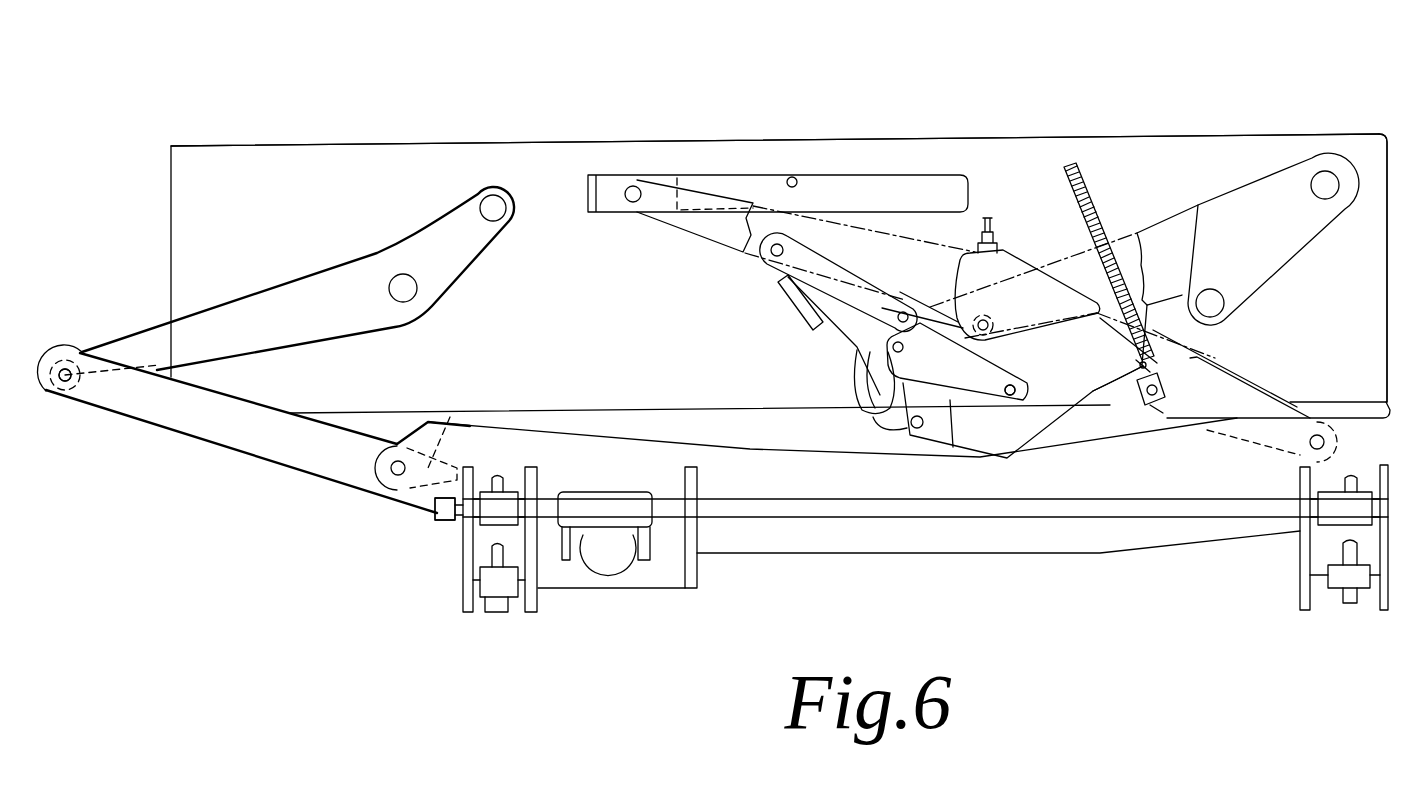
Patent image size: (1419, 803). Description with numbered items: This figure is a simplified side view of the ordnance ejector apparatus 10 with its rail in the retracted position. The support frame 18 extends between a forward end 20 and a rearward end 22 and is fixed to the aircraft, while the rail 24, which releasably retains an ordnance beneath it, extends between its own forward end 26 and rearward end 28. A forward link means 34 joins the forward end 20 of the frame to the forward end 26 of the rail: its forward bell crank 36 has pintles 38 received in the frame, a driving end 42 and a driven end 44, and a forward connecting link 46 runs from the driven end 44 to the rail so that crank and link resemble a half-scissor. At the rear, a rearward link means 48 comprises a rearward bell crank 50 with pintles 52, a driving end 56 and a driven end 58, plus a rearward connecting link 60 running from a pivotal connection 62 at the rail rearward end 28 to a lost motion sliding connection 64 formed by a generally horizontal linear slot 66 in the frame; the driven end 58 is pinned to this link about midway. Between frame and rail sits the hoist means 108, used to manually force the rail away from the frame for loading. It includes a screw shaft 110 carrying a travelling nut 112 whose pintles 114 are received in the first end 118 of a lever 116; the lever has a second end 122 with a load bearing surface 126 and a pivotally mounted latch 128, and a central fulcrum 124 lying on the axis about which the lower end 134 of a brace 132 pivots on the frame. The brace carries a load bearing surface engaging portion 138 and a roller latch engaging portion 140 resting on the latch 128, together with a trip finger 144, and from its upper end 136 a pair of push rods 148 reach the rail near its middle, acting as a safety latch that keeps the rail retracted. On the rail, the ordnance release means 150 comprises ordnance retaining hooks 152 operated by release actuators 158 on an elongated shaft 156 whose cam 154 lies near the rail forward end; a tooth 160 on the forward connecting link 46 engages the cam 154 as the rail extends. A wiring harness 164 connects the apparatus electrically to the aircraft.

The ordnance ejector apparatus 10 is at (930, 112).
The support frame 18 is at (360, 145).
The forward end of the support frame 20 is at (168, 172).
The rearward end of the support frame 22 is at (1390, 142).
The rail 24 is at (1165, 557).
The forward end of the rail 26 is at (376, 480).
The rearward end of the rail 28 is at (1388, 410).
The forward link means 34 is at (65, 347).
The forward bell crank 36 is at (297, 287).
The pintles 38 is at (416, 293).
The driving end 42 is at (487, 190).
The driven end 44 is at (72, 400).
The forward connecting link 46 is at (185, 428).
The rearward link means 48 is at (1158, 226).
The rearward bell crank 50 is at (1295, 250).
The pintles 52 is at (1316, 180).
The driving end 56 is at (1222, 322).
The driven end 58 is at (965, 300).
The rearward connecting link 60 is at (1262, 394).
The pivotal connection 62 is at (1310, 444).
The lost motion sliding connection 64 is at (637, 184).
The linear slot 66 is at (792, 177).
The hoist means 108 is at (1035, 266).
The screw shaft 110 is at (1068, 163).
The travelling nut 112 is at (1183, 385).
The pintles 114 is at (1136, 405).
The lever 116 is at (1090, 420).
The first end 118 is at (1150, 355).
The second end 122 is at (905, 435).
The central fulcrum 124 is at (1010, 397).
The load bearing surface 126 is at (887, 298).
The latch 128 is at (870, 415).
The brace 132 is at (953, 447).
The lower end 134 is at (1025, 398).
The upper end 136 is at (787, 257).
The load bearing surface engaging portion 138 is at (897, 318).
The latch engaging portion 140 is at (845, 394).
The trip finger 144 is at (855, 368).
The push rods 148 is at (800, 312).
The ordnance release means 150 is at (446, 522).
The ordnance retaining hooks 152 is at (500, 612).
The cam 154 is at (433, 510).
The shaft 156 is at (1245, 520).
The release actuators 158 is at (486, 522).
The tooth 160 is at (440, 458).
The wiring harness 164 is at (986, 215).